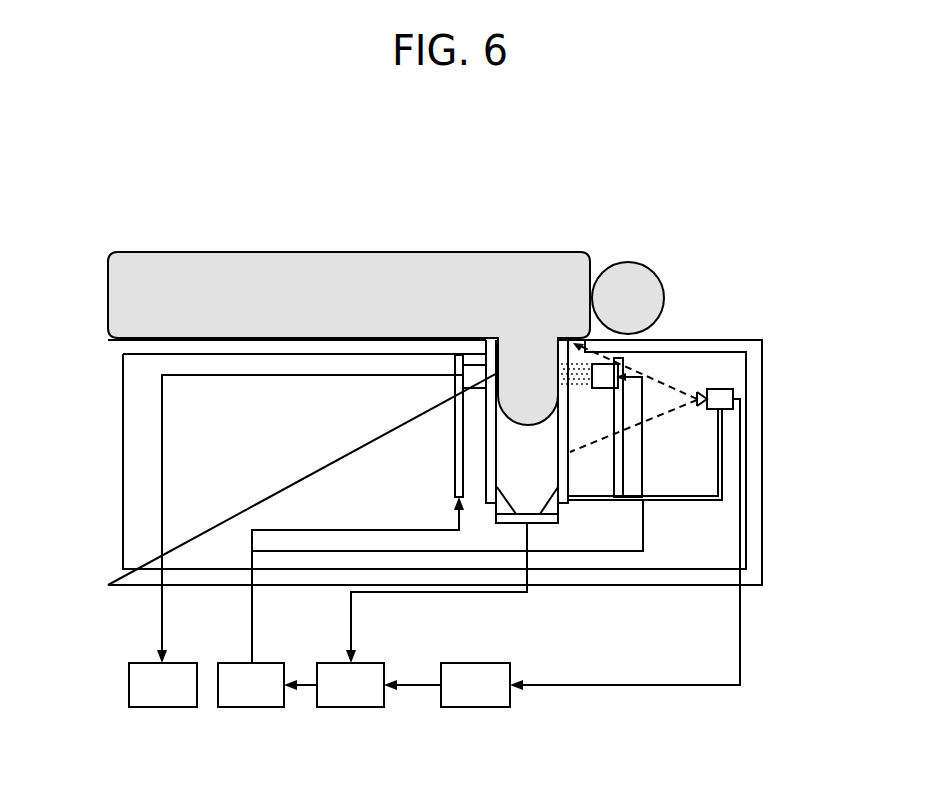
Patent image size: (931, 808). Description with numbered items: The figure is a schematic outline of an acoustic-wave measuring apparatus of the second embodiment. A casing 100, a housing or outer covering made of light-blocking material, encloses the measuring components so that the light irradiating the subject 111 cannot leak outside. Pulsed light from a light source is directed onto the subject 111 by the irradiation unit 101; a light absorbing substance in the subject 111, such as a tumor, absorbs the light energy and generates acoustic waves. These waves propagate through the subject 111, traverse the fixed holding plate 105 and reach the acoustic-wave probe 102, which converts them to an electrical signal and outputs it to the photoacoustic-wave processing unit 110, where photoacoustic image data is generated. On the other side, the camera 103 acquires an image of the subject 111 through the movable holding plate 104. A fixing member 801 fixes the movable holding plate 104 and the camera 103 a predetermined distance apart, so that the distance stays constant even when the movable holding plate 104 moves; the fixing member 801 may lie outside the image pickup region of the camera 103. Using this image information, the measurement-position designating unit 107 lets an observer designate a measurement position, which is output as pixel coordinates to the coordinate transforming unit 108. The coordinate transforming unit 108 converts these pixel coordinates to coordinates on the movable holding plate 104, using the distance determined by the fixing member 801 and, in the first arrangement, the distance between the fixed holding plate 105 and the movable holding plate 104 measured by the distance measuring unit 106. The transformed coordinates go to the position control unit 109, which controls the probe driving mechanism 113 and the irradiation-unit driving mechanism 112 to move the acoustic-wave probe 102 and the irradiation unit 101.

The casing 100 is at (118, 518).
The irradiation unit 101 is at (612, 366).
The acoustic-wave probe 102 is at (463, 383).
The camera 103 is at (735, 395).
The movable holding plate 104 is at (562, 445).
The fixed holding plate 105 is at (492, 470).
The distance measuring unit 106 is at (553, 510).
The measurement-position designating unit 107 is at (478, 663).
The coordinate transforming unit 108 is at (368, 663).
The position control unit 109 is at (268, 663).
The photoacoustic-wave processing unit 110 is at (180, 663).
The subject 111 is at (525, 370).
The irradiation-unit driving mechanism 112 is at (618, 478).
The probe driving mechanism 113 is at (457, 445).
The fixing member 801 is at (720, 442).